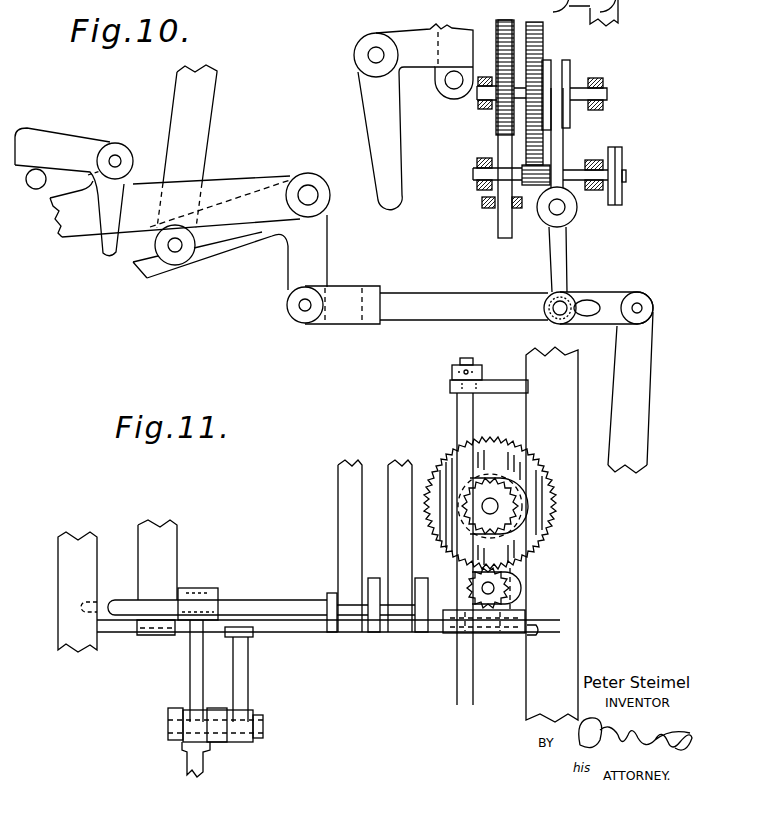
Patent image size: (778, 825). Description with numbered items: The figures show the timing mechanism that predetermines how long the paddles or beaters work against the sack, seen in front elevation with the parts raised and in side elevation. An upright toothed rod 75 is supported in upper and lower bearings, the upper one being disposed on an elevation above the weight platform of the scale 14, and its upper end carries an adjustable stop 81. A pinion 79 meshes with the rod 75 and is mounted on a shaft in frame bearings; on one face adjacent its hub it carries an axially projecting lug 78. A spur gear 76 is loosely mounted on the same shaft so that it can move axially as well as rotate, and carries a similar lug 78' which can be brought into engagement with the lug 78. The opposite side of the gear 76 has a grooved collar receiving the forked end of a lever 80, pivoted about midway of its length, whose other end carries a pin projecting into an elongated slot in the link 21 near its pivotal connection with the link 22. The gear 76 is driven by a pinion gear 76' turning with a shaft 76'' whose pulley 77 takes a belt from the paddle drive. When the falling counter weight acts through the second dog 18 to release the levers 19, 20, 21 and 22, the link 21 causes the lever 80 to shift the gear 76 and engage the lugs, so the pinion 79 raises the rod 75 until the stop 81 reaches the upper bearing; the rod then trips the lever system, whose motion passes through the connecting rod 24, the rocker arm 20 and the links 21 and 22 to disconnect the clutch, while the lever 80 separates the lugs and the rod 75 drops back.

In FIG. 10, the scale 14 is at (443, 27).
In FIG. 10, the second dog 18 is at (60, 140).
In FIG. 10, the lever 19 is at (146, 275).
In FIG. 10, the rocker arm 20 is at (322, 243).
In FIG. 11, the rocker arm 20 is at (190, 668).
In FIG. 10, the link 21 is at (450, 293).
In FIG. 11, the link 21 is at (216, 709).
In FIG. 10, the link 22 is at (640, 352).
In FIG. 11, the link 22 is at (203, 766).
In FIG. 10, the connecting rod 24 is at (203, 118).
In FIG. 11, the connecting rod 24 is at (389, 551).
In FIG. 10, the toothed rod 75 is at (497, 227).
In FIG. 11, the toothed rod 75 is at (474, 415).
In FIG. 10, the spur gear 76 is at (566, 93).
In FIG. 11, the spur gear 76 is at (489, 500).
In FIG. 10, the pinion gear 76' is at (511, 201).
In FIG. 11, the pinion gear 76' is at (519, 589).
In FIG. 10, the shaft 76'' is at (585, 166).
In FIG. 10, the pulley 77 is at (622, 158).
In FIG. 10, the lug 78 is at (477, 101).
In FIG. 10, the lug 78' is at (466, 107).
In FIG. 10, the pinion 79 is at (497, 120).
In FIG. 11, the pinion 79 is at (489, 494).
In FIG. 10, the lever 80 is at (568, 260).
In FIG. 11, the lever 80 is at (252, 670).
In FIG. 11, the stop 81 is at (483, 371).